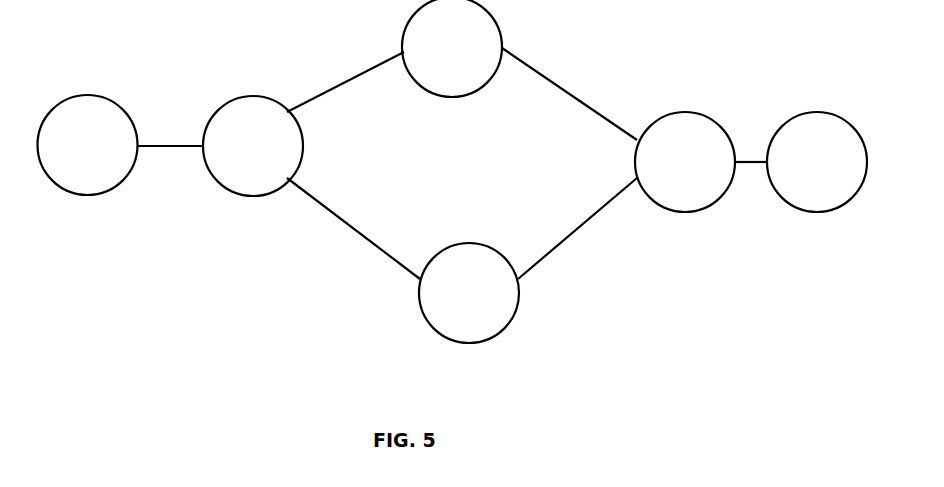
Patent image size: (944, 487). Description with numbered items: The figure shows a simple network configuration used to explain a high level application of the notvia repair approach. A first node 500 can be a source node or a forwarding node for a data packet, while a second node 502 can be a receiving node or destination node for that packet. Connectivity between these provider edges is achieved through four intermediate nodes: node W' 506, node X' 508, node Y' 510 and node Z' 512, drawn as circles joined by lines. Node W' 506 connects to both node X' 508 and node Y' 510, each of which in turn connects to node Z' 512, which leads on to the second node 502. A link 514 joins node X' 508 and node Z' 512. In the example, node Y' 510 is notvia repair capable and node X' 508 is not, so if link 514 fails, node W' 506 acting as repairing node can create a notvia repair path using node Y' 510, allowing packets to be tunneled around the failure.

The first node P1 500 is at (88, 145).
The second node P2 502 is at (817, 162).
The node W' 506 is at (253, 146).
The node X' 508 is at (452, 48).
The node Y' 510 is at (469, 293).
The node Z' 512 is at (685, 162).
The link 514 is at (571, 95).